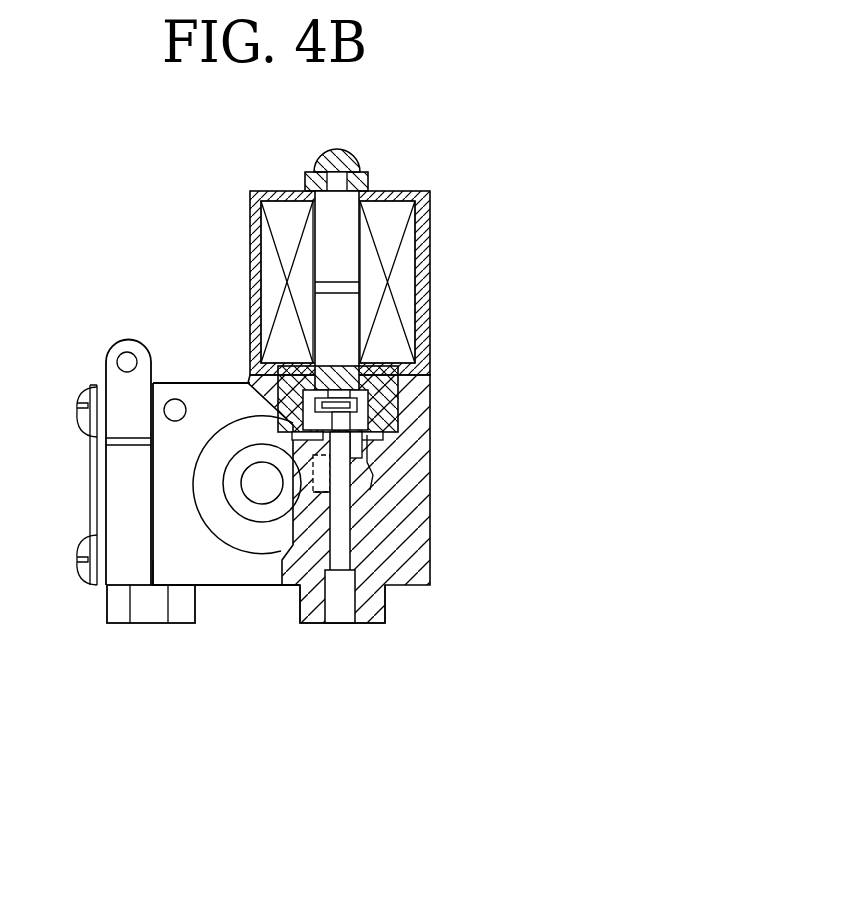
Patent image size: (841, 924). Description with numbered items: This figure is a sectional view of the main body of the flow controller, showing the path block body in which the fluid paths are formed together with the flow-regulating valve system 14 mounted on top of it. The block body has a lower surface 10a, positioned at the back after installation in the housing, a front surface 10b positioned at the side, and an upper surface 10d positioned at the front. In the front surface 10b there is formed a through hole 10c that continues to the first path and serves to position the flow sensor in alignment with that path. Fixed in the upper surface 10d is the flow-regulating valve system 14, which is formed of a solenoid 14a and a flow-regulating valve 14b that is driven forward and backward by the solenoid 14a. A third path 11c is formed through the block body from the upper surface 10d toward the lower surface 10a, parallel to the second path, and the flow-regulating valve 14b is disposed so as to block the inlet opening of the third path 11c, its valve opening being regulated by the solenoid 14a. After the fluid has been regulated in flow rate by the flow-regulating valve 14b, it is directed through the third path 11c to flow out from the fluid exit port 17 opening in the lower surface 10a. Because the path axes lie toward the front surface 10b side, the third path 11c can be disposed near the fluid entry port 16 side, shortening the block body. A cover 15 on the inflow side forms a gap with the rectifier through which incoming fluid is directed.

The lower surface 10a is at (255, 588).
The front surface 10b is at (215, 552).
The through hole 10c is at (257, 475).
The upper surface 10d is at (246, 368).
The third path 11c is at (340, 525).
The flow-regulating valve system 14 is at (433, 312).
The solenoid 14a is at (400, 265).
The flow-regulating valve 14b is at (357, 403).
The cover 15 is at (93, 492).
The fluid entry port 16 is at (150, 590).
The fluid exit port 17 is at (343, 612).